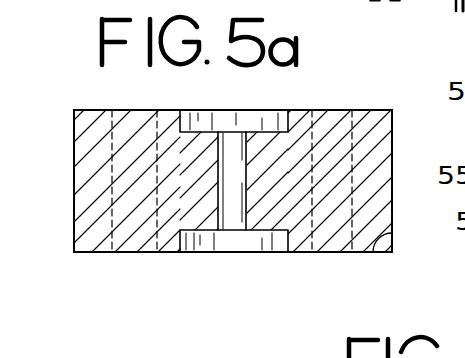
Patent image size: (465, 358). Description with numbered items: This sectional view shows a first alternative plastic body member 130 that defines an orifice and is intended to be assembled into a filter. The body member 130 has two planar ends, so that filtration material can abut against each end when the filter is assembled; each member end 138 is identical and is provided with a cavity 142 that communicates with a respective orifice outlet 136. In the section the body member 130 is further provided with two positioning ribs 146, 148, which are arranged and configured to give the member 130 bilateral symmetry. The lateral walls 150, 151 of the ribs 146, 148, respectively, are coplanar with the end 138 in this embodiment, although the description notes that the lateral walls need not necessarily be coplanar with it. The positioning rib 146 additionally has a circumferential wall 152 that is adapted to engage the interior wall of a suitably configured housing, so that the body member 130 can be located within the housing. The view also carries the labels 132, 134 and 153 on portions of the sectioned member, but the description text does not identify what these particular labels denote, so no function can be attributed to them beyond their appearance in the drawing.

The body member 130 is at (58, 130).
The conductive post 132 is at (237, 177).
The stem of conductive member 134 is at (237, 142).
The orifice outlet 136 is at (235, 222).
The member end 138 is at (171, 110).
The cavity 142 is at (260, 120).
The positioning rib 146 is at (95, 218).
The positioning rib 148 is at (382, 253).
The lateral wall 150 is at (98, 110).
The lateral wall 151 is at (372, 110).
The circumferential wall 152 is at (74, 189).
The right side surface 153 is at (393, 157).